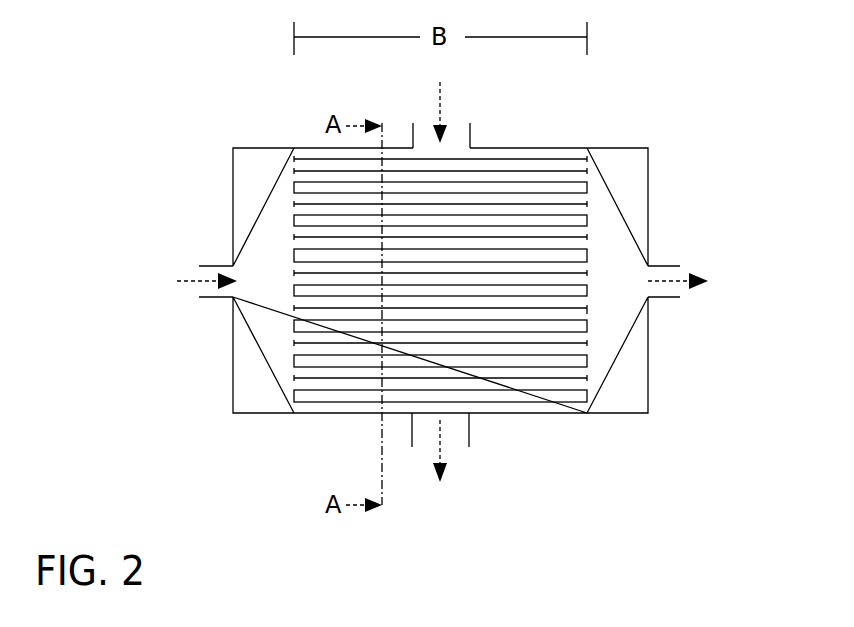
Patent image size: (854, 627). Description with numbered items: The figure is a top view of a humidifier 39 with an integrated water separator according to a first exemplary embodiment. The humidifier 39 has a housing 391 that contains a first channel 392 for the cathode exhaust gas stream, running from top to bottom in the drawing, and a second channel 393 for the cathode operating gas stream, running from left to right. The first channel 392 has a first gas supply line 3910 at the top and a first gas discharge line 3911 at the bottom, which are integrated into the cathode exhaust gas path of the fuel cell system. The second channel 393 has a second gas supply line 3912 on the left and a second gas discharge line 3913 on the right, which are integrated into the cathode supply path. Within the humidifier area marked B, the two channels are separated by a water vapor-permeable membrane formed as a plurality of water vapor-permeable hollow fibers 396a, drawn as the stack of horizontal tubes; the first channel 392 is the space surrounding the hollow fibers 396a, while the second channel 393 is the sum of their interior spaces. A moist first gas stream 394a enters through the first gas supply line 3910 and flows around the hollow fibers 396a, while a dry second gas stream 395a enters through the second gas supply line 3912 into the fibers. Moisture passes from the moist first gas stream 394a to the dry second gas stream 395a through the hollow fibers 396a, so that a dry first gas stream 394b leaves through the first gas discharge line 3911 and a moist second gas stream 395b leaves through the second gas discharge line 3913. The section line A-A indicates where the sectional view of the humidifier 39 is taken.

The humidifier 39 is at (632, 108).
The housing 391 is at (257, 148).
The first channel 392 is at (504, 156).
The second channel 393 is at (547, 167).
The moist first gas stream 394a is at (480, 77).
The dry first gas stream 394b is at (440, 433).
The dry second gas stream 395a is at (190, 281).
The moist second gas stream 395b is at (668, 281).
The water vapor-permeable hollow fibers 396a is at (353, 403).
The first gas supply line 3910 is at (412, 137).
The first gas discharge line 3911 is at (469, 425).
The second gas supply line 3912 is at (213, 266).
The second gas discharge line 3913 is at (662, 266).